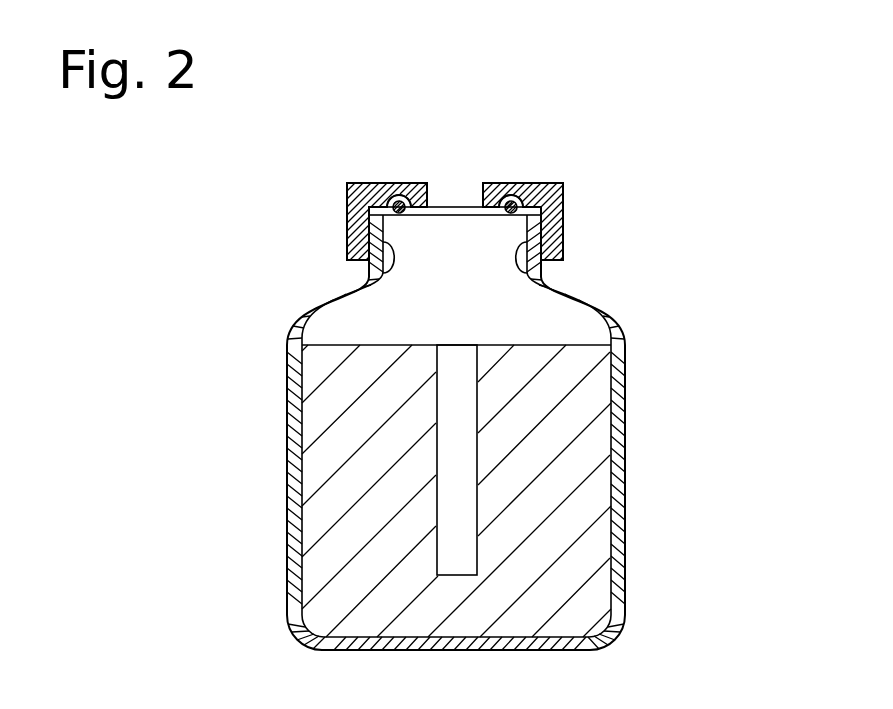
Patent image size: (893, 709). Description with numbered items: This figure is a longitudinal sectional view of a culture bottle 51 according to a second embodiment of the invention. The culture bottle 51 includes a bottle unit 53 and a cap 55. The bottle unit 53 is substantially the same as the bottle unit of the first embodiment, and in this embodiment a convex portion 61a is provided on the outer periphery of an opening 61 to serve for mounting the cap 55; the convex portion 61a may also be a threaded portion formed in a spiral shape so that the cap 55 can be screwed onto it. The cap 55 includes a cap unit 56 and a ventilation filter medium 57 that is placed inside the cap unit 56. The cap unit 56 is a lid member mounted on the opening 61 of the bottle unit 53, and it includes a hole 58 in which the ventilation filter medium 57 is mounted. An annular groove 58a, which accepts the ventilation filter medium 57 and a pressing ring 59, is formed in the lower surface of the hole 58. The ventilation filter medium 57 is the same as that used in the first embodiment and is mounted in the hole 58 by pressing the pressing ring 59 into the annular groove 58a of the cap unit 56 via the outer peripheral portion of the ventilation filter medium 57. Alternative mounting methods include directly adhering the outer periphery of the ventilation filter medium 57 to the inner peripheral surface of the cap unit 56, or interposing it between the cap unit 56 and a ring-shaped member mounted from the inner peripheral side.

The culture bottle 51 is at (630, 135).
The bottle unit 53 is at (645, 497).
The cap 55 is at (574, 188).
The cap unit 56 is at (347, 216).
The ventilation filter medium 57 is at (457, 207).
The hole 58 is at (438, 205).
The annular groove 58a is at (366, 195).
The pressing ring 59 is at (440, 207).
The opening 61 is at (373, 273).
The convex portion 61a is at (565, 226).